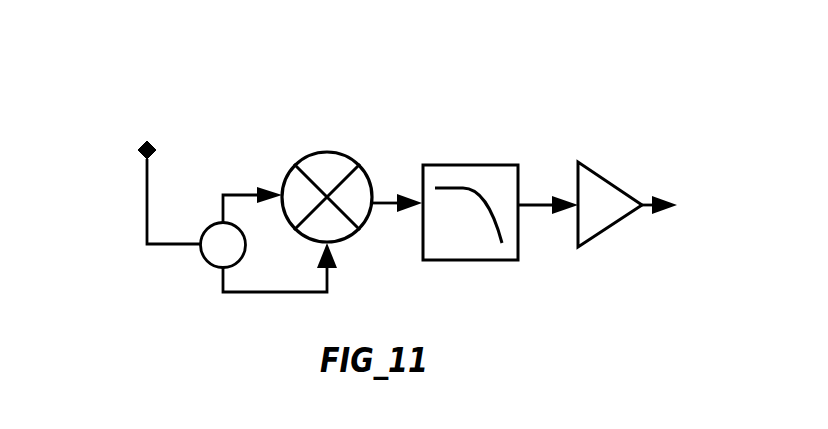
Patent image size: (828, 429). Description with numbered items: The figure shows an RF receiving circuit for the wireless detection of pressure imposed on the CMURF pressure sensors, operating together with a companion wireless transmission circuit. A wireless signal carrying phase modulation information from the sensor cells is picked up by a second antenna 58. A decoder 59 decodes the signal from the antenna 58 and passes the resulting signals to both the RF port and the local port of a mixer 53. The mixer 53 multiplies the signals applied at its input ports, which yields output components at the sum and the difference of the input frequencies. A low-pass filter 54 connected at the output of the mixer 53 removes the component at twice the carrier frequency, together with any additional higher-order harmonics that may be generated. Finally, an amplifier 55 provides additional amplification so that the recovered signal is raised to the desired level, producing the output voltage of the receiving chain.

The mixer 53 is at (325, 163).
The low-pass filter 54 is at (452, 175).
The amplifier 55 is at (595, 190).
The second antenna 58 is at (137, 162).
The decoder 59 is at (218, 248).